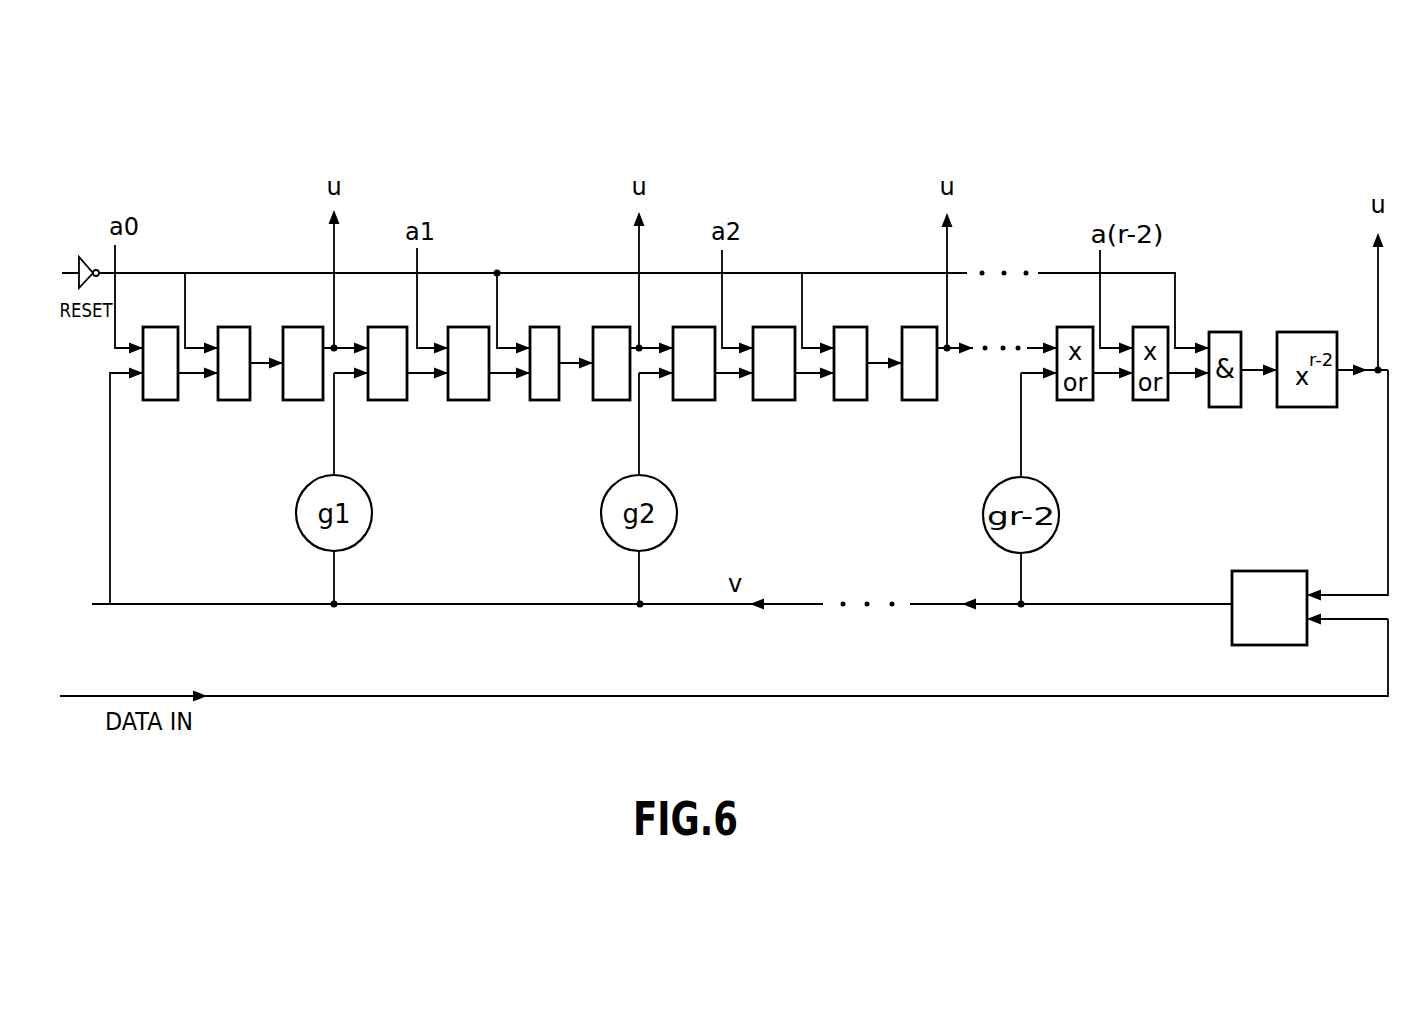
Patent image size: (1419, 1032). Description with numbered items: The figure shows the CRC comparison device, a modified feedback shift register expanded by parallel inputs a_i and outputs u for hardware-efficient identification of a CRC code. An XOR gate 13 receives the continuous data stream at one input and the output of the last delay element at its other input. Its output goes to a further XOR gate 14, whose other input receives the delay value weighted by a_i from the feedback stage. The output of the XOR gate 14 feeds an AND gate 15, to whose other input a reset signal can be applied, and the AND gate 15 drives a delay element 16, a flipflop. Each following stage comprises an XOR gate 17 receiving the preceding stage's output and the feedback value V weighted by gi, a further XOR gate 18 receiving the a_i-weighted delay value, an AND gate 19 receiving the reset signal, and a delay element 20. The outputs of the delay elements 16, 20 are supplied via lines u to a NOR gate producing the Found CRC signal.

The XOR gate 13 is at (1262, 645).
The XOR gate 14 is at (158, 400).
The AND gate 15 is at (235, 400).
The delay element 16 is at (297, 400).
The XOR gate 17 is at (386, 400).
The XOR gate 18 is at (470, 400).
The AND gate 19 is at (546, 400).
The delay element 20 is at (603, 400).